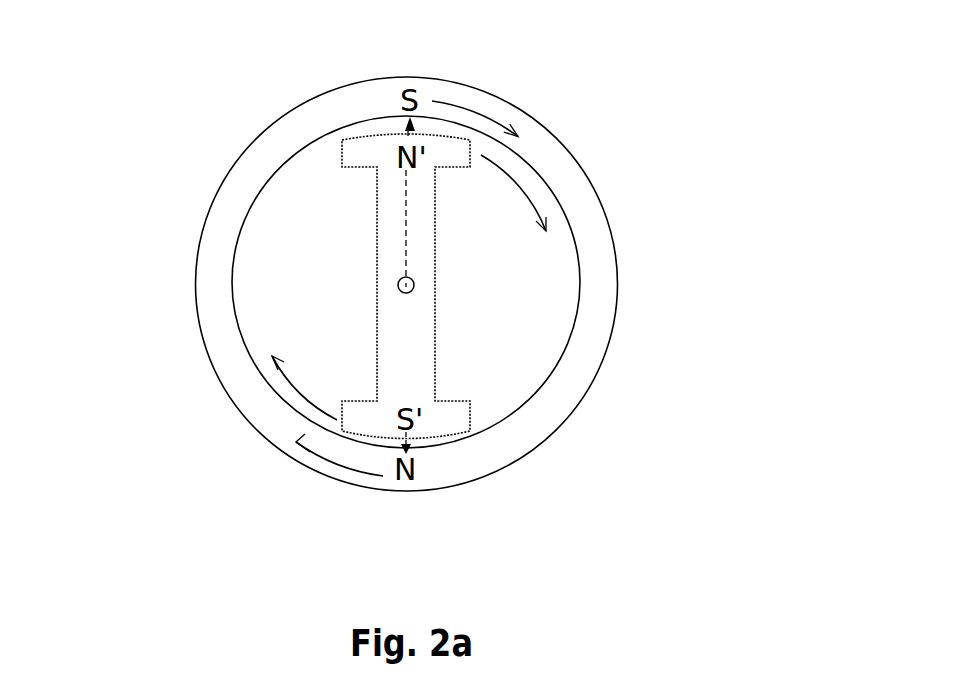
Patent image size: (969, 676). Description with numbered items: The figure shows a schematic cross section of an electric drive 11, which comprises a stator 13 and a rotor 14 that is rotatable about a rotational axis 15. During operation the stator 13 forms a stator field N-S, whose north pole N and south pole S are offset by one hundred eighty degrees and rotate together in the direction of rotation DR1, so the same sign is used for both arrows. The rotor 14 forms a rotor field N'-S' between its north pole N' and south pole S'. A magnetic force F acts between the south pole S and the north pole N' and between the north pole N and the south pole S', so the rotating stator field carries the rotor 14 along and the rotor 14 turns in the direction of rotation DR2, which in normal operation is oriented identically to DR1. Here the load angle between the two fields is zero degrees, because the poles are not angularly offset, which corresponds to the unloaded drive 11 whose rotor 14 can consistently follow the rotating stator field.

The electric drive 11 is at (166, 91).
The stator 13 is at (470, 284).
The rotor 14 is at (511, 322).
The rotational axis 15 is at (557, 365).
The direction of rotation DR1 is at (396, 285).
The direction of rotation DR2 is at (414, 300).
The magnetic force F is at (407, 132).